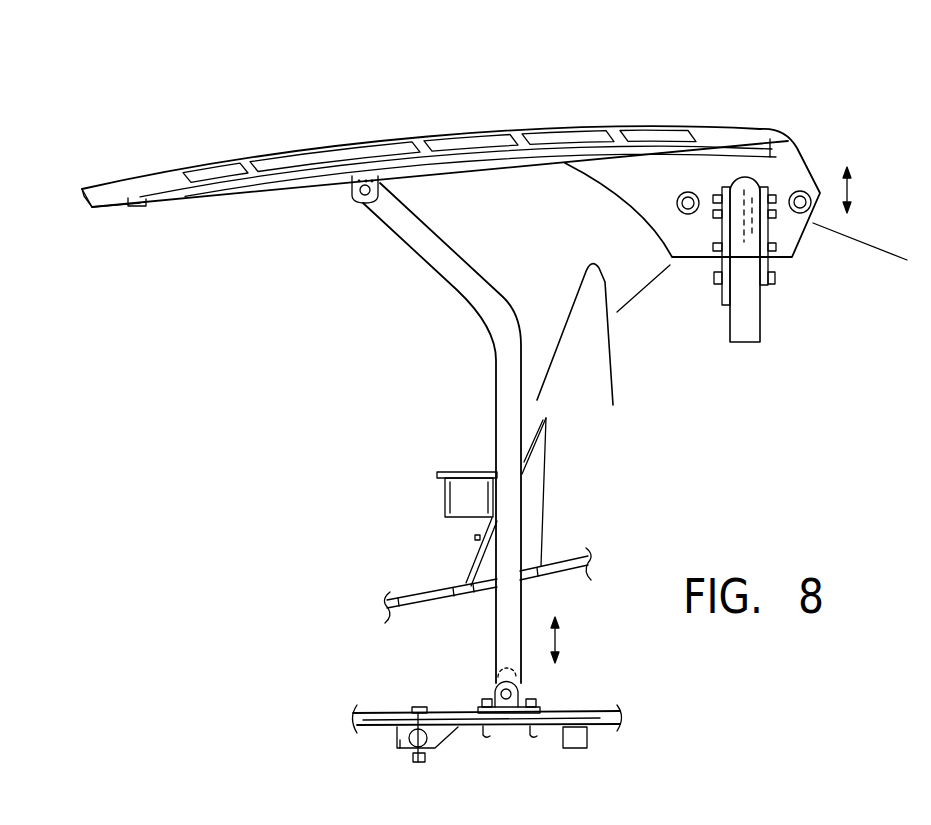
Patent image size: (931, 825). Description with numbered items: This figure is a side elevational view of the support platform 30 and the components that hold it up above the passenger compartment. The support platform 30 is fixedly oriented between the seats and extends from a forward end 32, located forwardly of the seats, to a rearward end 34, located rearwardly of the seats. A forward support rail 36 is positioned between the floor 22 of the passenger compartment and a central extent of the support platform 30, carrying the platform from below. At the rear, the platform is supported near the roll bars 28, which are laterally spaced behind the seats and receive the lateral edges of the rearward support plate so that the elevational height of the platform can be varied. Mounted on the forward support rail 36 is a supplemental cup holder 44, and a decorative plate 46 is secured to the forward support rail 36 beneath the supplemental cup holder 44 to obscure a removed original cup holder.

The floor 22 is at (577, 710).
The roll bars 28 is at (752, 300).
The support platform 30 is at (418, 137).
The forward end 32 is at (84, 187).
The rearward end 34 is at (764, 128).
The forward support rail 36 is at (480, 300).
The supplemental cup holder 44 is at (441, 497).
The decorative plate 46 is at (530, 458).